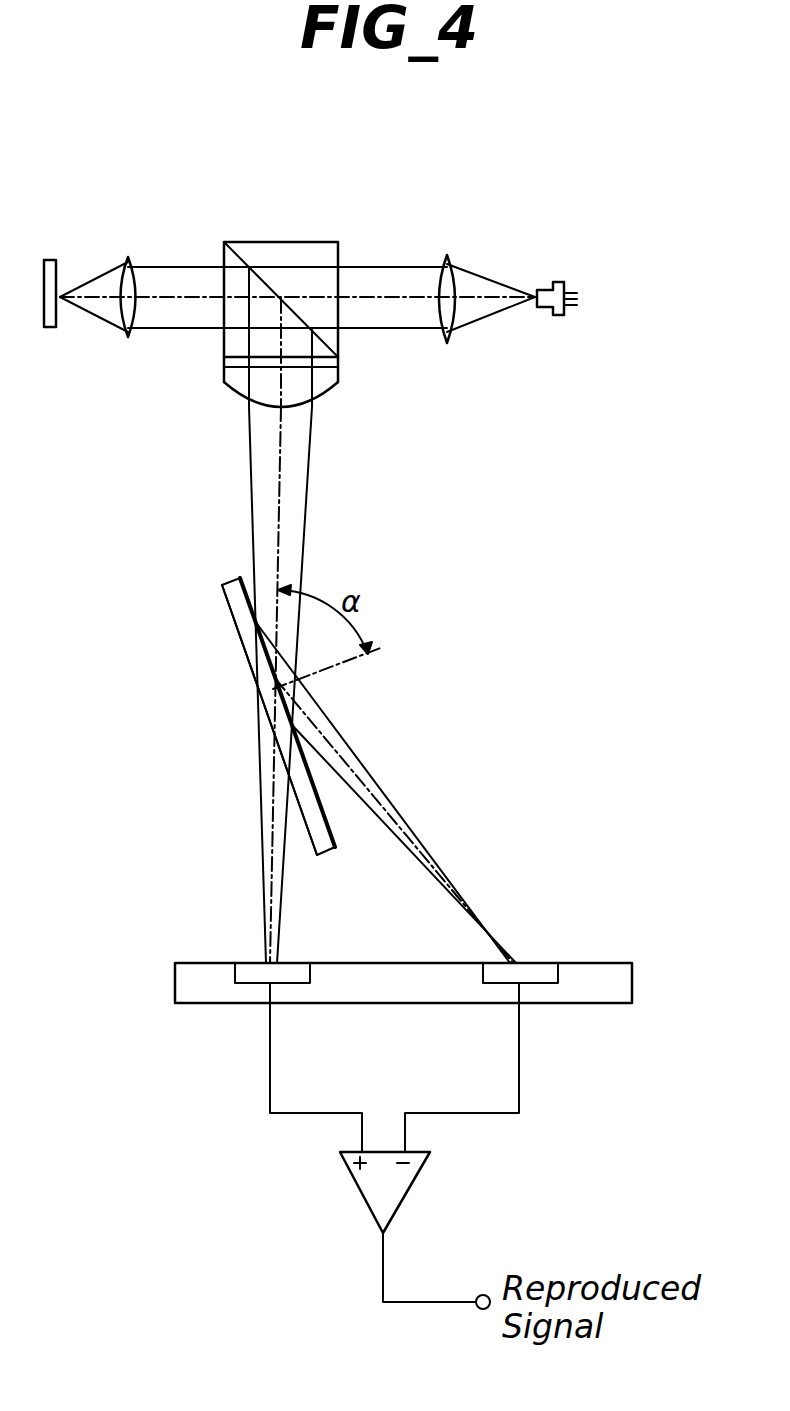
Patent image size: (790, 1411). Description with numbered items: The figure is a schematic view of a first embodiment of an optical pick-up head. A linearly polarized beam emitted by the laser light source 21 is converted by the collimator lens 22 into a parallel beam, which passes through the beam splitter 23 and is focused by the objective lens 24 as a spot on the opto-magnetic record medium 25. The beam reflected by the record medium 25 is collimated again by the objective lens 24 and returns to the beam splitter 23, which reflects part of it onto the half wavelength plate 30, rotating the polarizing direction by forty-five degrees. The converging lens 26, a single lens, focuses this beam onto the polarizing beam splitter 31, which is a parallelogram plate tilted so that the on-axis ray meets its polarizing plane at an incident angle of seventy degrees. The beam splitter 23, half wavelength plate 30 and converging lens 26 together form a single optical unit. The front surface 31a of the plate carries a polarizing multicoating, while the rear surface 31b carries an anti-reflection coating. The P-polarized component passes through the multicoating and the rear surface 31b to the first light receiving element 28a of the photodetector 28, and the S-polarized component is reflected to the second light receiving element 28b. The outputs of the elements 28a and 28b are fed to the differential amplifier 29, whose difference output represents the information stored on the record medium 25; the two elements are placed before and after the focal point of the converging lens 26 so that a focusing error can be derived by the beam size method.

The laser light source 21 is at (560, 282).
The collimator lens 22 is at (447, 255).
The beam splitter 23 is at (287, 242).
The objective lens 24 is at (128, 255).
The opto-magnetic record medium 25 is at (48, 258).
The converging lens 26 is at (338, 387).
The photodetector 28 is at (439, 947).
The first light receiving element 28a is at (245, 968).
The second light receiving element 28b is at (542, 968).
The differential amplifier 29 is at (413, 1193).
The half wavelength plate 30 is at (223, 360).
The polarizing beam splitter 31 is at (269, 719).
The front surface 31a is at (330, 828).
The rear surface 31b is at (230, 615).